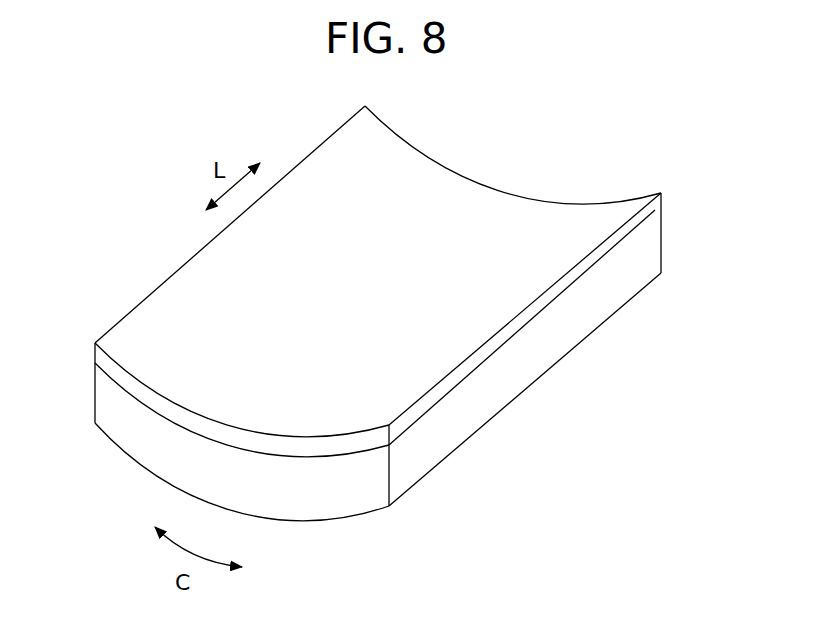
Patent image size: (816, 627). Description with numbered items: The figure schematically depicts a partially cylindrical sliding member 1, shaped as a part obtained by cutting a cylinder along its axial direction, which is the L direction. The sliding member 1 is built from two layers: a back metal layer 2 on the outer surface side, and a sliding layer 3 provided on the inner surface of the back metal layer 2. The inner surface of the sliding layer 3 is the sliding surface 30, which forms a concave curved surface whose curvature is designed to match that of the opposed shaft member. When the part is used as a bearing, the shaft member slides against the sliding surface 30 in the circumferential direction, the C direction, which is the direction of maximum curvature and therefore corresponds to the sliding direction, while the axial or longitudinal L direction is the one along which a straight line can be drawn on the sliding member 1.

The sliding member 1 is at (100, 262).
The back metal layer 2 is at (595, 305).
The sliding layer 3 is at (655, 210).
The sliding surface 30 is at (347, 185).